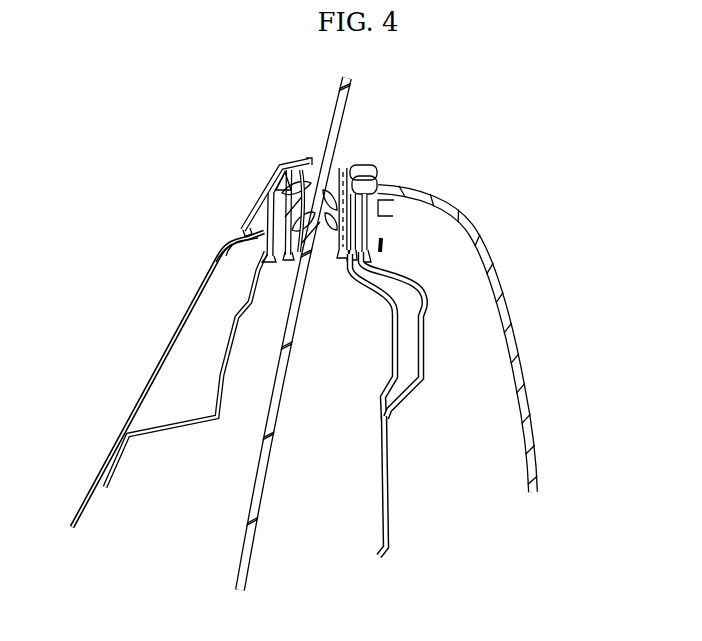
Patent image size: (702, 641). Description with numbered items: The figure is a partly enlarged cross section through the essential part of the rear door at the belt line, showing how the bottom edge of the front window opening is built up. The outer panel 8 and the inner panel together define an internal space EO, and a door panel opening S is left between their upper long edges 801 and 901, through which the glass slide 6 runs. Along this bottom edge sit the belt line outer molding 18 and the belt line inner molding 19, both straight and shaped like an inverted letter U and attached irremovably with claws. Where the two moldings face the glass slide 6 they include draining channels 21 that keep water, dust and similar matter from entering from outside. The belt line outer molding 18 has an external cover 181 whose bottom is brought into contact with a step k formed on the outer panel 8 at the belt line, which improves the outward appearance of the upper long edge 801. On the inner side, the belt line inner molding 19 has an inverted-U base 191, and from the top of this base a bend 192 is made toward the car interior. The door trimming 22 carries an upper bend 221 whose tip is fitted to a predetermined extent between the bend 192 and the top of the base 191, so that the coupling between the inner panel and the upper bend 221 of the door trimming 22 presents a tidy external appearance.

The glass slide 6 is at (252, 490).
The outer panel 8 is at (100, 438).
The step k is at (226, 254).
The belt line outer molding 18 is at (258, 180).
The external cover 181 is at (245, 214).
The upper long edge of outer panel 801 is at (278, 207).
The draining channel 21 is at (332, 185).
The base 191 is at (345, 172).
The bend 192 is at (365, 170).
The belt line inner molding 19 is at (399, 223).
The upper long edge of inner panel 901 is at (376, 222).
The space EO is at (322, 518).
The door panel opening S is at (320, 255).
The door trimming 22 is at (478, 328).
The upper bend 221 is at (443, 204).